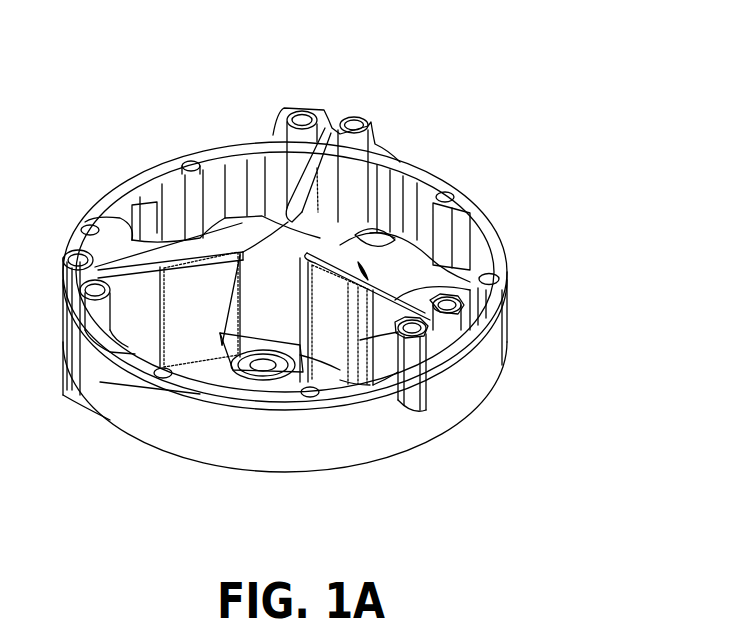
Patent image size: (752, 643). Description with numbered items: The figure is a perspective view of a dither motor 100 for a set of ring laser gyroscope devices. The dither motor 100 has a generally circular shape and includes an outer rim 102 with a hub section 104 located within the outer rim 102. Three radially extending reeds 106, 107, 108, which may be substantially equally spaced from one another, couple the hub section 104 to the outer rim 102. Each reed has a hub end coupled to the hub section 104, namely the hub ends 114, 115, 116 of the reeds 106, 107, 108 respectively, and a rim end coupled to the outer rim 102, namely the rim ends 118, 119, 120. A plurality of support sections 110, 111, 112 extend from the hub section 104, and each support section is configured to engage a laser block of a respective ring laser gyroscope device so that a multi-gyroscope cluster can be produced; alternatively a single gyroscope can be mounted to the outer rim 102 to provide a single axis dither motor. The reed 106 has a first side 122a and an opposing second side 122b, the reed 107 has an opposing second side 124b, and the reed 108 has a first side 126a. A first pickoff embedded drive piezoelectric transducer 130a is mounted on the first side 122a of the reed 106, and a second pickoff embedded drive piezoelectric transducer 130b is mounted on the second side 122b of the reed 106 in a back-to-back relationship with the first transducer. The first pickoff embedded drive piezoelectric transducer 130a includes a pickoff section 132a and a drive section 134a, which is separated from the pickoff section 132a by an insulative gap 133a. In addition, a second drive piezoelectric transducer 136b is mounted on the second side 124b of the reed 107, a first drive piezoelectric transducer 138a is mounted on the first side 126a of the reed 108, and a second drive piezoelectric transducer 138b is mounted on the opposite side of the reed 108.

The dither motor 100 is at (145, 53).
The outer rim 102 is at (71, 223).
The hub section 104 is at (355, 225).
The reed 106 is at (385, 303).
The reed 107 is at (143, 260).
The reed 108 is at (350, 113).
The support section 110 is at (255, 370).
The support section 111 is at (255, 232).
The support section 112 is at (335, 262).
The hub end 114 is at (326, 272).
The hub end 115 is at (231, 270).
The hub end 116 is at (285, 222).
The rim end 118 is at (450, 313).
The rim end 119 is at (107, 275).
The rim end 120 is at (327, 141).
The first side 122a is at (430, 410).
The second side 122b is at (455, 287).
The second side 124b is at (70, 360).
The first side 126a is at (290, 247).
The first pickoff embedded drive piezoelectric transducer 130a is at (320, 375).
The second pickoff embedded drive piezoelectric transducer 130b is at (360, 285).
The pickoff section 132a is at (360, 372).
The insulative gap 133a is at (350, 368).
The drive section 134a is at (326, 352).
The second drive piezoelectric transducer 136b is at (193, 347).
The first drive piezoelectric transducer 138a is at (330, 232).
The second drive piezoelectric transducer 138b is at (292, 206).